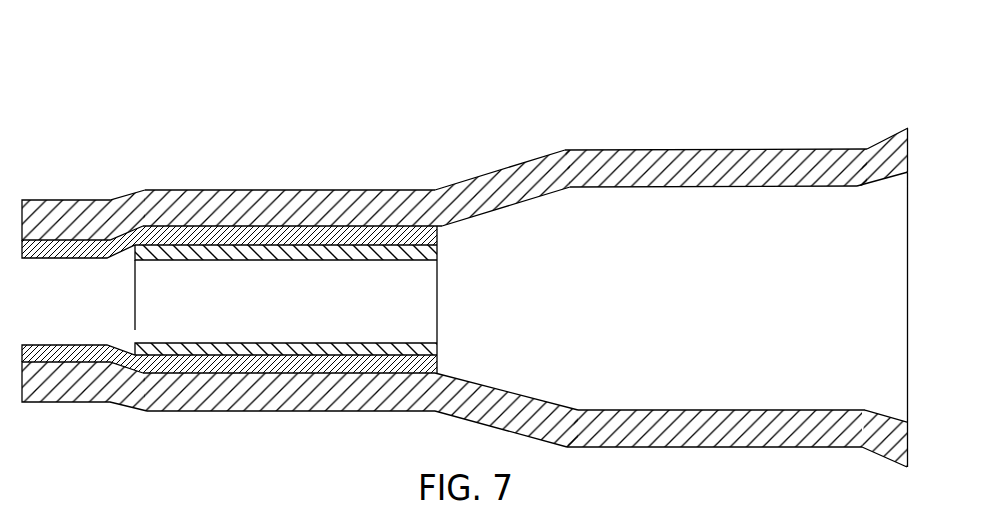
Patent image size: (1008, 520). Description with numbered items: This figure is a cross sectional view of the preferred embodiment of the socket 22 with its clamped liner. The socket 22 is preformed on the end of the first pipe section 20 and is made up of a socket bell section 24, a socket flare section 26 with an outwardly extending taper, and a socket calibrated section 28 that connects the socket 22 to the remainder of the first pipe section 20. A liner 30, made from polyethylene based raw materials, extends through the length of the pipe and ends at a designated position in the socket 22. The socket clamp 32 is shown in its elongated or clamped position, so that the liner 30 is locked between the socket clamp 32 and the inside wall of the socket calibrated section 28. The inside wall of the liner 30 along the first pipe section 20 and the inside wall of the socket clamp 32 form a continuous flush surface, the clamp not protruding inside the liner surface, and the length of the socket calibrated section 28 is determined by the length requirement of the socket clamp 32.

The first pipe section 20 is at (67, 200).
The socket 22 is at (403, 92).
The socket bell section 24 is at (655, 150).
The socket flare section 26 is at (879, 148).
The socket calibrated section 28 is at (280, 190).
The liner 30 is at (182, 226).
The socket clamp 32 is at (359, 245).